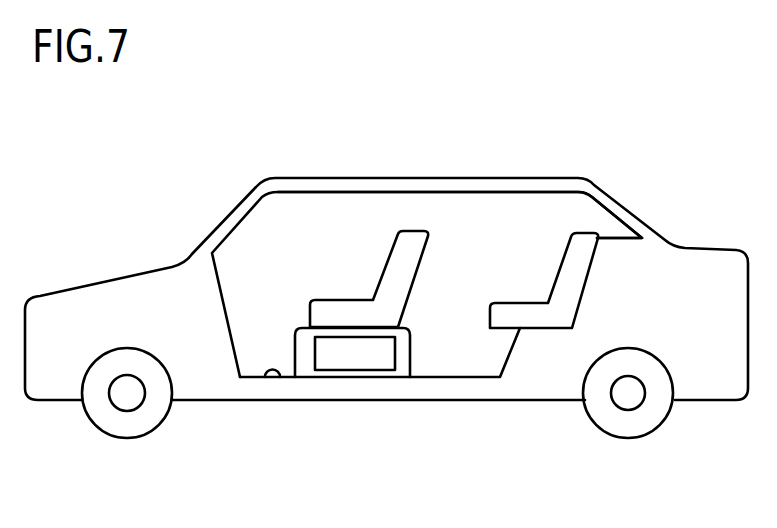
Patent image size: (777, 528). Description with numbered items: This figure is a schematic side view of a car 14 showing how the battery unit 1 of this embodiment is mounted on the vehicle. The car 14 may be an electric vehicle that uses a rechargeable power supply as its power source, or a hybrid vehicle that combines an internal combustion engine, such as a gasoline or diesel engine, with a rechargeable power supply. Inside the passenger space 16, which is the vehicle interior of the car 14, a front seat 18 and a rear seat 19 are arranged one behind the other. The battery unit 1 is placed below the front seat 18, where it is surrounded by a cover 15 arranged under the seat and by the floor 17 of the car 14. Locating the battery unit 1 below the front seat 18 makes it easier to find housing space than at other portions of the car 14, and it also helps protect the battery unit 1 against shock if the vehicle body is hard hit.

The car 14 is at (116, 187).
The passenger space 16 is at (473, 228).
The front seat 18 is at (352, 315).
The rear seat 19 is at (522, 303).
The cover 15 is at (410, 360).
The battery unit 1 is at (357, 355).
The floor 17 is at (265, 378).